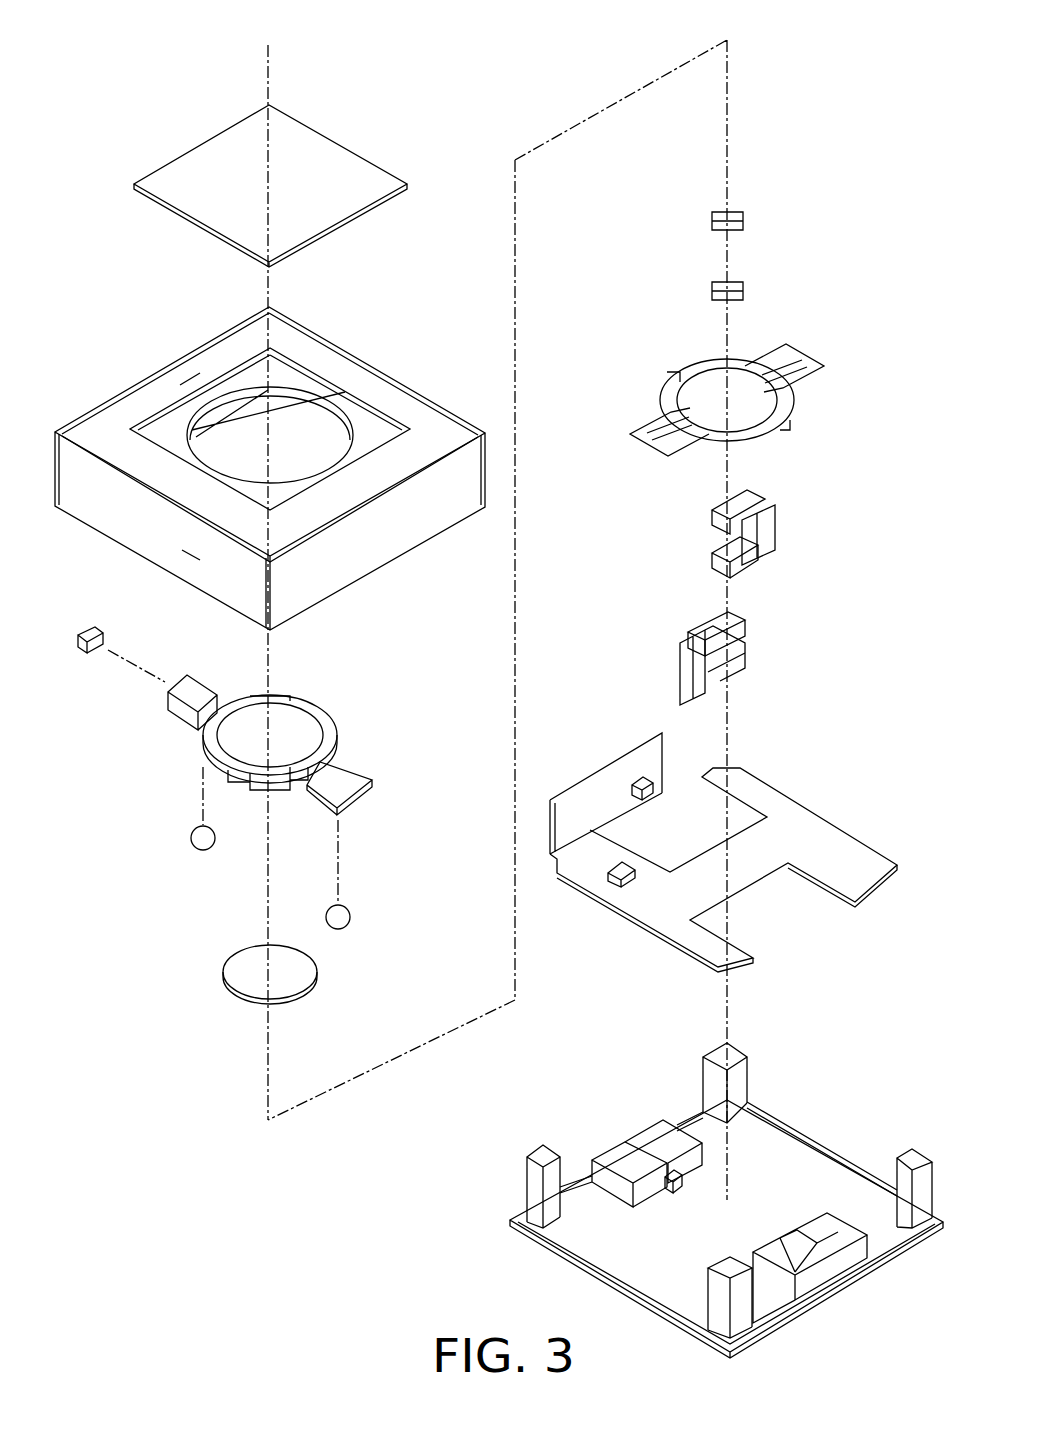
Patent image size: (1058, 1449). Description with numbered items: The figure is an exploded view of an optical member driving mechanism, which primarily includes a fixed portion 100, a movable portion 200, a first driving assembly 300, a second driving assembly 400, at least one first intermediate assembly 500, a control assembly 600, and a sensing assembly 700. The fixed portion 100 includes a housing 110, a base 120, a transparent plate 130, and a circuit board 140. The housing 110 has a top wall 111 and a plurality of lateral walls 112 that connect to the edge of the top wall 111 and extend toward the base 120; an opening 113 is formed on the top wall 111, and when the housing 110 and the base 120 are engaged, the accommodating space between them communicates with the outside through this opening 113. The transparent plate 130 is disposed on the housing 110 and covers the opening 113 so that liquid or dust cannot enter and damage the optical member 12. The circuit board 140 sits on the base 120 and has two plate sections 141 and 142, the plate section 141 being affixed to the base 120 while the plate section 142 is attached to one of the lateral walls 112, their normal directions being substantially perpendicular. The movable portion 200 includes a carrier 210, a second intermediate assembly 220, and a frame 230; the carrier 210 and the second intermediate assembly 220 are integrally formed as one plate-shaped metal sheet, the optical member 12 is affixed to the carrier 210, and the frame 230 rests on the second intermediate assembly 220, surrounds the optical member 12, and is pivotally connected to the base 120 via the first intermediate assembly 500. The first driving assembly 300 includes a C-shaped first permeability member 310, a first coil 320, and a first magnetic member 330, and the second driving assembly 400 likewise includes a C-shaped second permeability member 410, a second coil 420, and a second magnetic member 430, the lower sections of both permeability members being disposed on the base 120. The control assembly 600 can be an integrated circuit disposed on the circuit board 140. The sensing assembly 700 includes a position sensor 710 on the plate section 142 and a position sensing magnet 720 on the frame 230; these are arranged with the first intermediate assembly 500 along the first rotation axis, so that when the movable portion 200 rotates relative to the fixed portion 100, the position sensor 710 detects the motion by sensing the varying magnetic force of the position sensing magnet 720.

The optical member 12 is at (302, 977).
The fixed portion 100 is at (895, 0).
The housing 110 is at (270, 468).
The top wall 111 is at (180, 385).
The lateral walls 112 is at (182, 550).
The opening 113 is at (332, 415).
The base 120 is at (805, 1167).
The transparent plate 130 is at (320, 163).
The circuit board 140 is at (749, 841).
The plate section 141 is at (803, 822).
The plate section 142 is at (607, 778).
The movable portion 200 is at (895, 135).
The carrier 210 is at (703, 383).
The second intermediate assembly 220 is at (668, 387).
The frame 230 is at (333, 722).
The first driving assembly 300 is at (895, 235).
The first permeability member 310 is at (728, 510).
The first coil 320 is at (767, 533).
The first magnetic member 330 is at (712, 218).
The second driving assembly 400 is at (895, 338).
The second permeability member 410 is at (737, 618).
The second coil 420 is at (693, 668).
The second magnetic member 430 is at (712, 290).
The first intermediate assembly 500 is at (192, 838).
The control assembly 600 is at (615, 887).
The sensing assembly 700 is at (895, 443).
The position sensor 710 is at (647, 797).
The position sensing magnet 720 is at (81, 653).